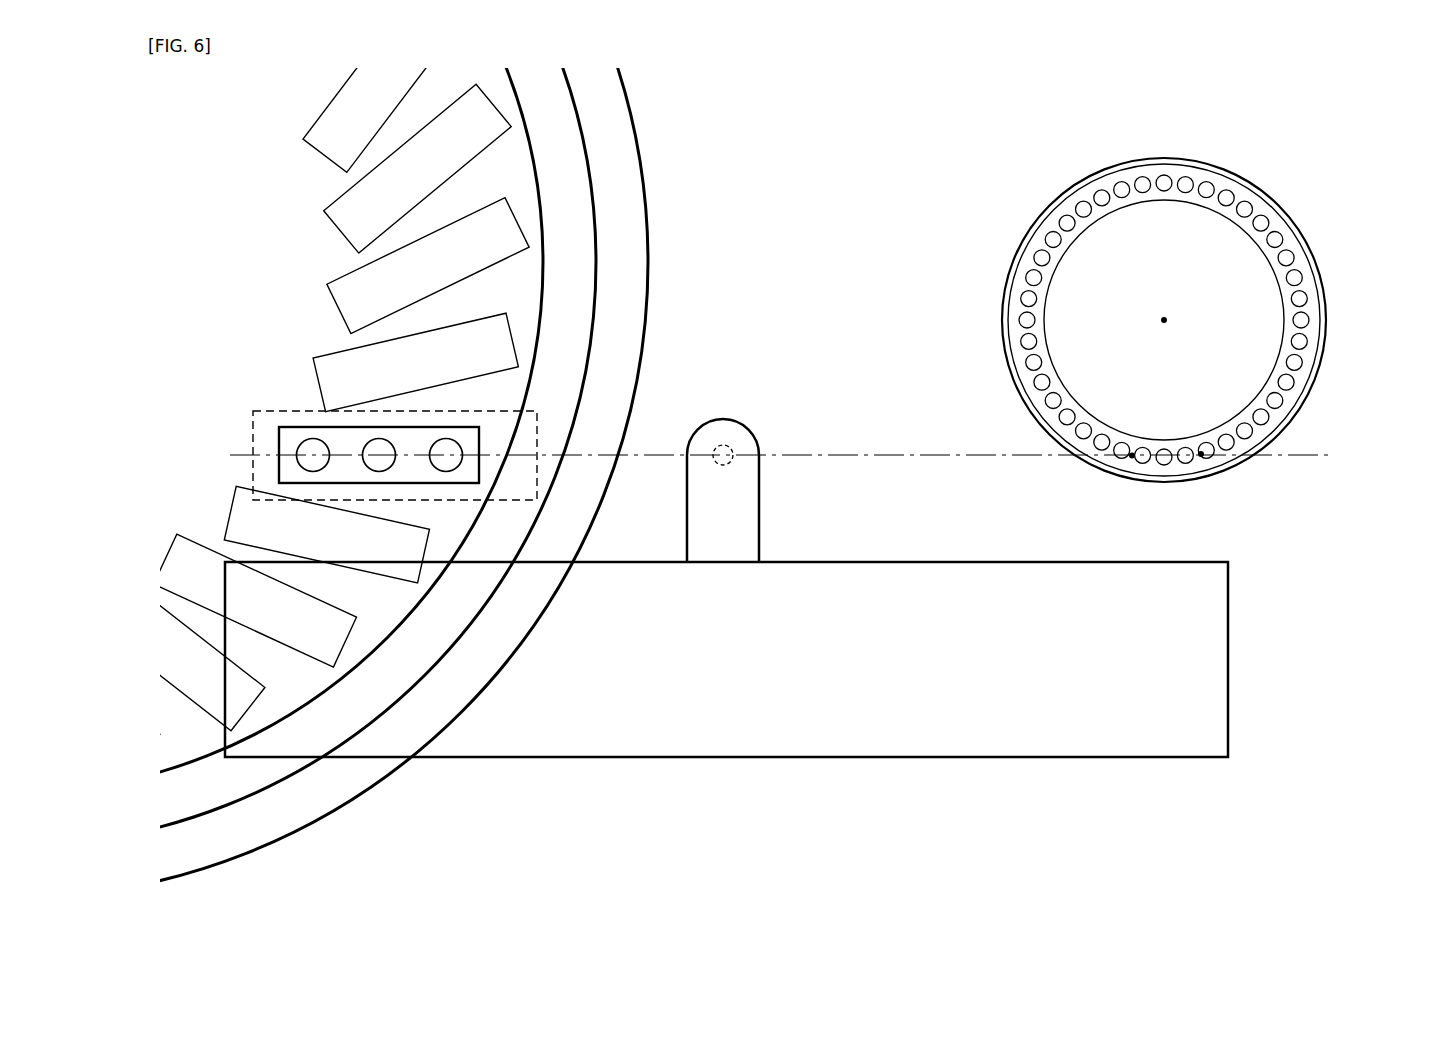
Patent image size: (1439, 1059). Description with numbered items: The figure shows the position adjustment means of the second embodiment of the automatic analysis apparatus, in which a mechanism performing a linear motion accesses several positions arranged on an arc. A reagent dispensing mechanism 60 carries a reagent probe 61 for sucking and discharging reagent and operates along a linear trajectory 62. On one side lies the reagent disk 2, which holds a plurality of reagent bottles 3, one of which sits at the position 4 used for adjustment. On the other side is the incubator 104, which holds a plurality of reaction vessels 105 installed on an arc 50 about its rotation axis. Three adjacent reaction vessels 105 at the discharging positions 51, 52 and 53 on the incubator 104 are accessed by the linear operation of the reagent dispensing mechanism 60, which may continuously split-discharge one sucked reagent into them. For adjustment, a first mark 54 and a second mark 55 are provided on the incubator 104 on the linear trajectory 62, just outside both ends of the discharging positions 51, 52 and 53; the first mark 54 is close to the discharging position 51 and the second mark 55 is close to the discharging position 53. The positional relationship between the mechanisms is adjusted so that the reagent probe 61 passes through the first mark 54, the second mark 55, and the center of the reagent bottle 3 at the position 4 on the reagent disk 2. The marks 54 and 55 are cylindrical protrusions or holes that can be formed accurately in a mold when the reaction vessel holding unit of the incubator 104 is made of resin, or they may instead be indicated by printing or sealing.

The reagent disk 2 is at (510, 299).
The reagent bottle 3 is at (479, 433).
The position 4 is at (253, 433).
The arc 50 is at (1290, 363).
The discharging position 51 is at (1191, 460).
The discharging position 52 is at (1166, 460).
The discharging position 53 is at (1145, 460).
The first mark 54 is at (1204, 458).
The second mark 55 is at (1131, 458).
The reagent dispensing mechanism 60 is at (776, 731).
The reagent probe 61 is at (728, 446).
The linear trajectory 62 is at (879, 453).
The incubator 104 is at (1050, 205).
The reaction vessel 105 is at (1247, 212).